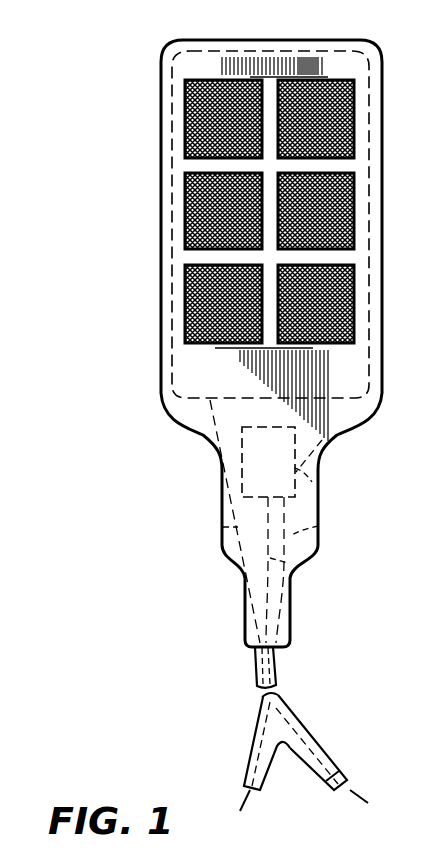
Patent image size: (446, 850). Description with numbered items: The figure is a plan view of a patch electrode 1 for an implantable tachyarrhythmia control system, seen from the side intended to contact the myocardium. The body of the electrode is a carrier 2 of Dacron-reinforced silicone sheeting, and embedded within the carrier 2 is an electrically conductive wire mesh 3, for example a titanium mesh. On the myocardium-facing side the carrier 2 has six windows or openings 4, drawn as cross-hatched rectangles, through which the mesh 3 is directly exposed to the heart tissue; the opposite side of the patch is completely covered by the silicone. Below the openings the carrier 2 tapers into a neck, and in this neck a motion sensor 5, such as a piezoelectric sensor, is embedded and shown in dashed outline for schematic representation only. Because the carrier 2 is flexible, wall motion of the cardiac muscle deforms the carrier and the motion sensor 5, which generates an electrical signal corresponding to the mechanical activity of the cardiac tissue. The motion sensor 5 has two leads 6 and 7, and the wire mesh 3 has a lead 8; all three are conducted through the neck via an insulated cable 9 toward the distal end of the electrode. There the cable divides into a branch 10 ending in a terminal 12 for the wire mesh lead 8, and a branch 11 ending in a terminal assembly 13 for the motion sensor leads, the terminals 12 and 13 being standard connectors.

The patch electrode 1 is at (178, 443).
The carrier 2 is at (325, 443).
The wire mesh 3 is at (318, 70).
The openings 4 is at (248, 80).
The motion sensor 5 is at (320, 484).
The lead 6 is at (316, 526).
The lead 7 is at (292, 568).
The lead 8 is at (223, 528).
The insulated cable 9 is at (277, 666).
The branch 10 is at (258, 740).
The branch 11 is at (323, 752).
The terminal 12 is at (242, 796).
The terminal assembly 13 is at (352, 808).